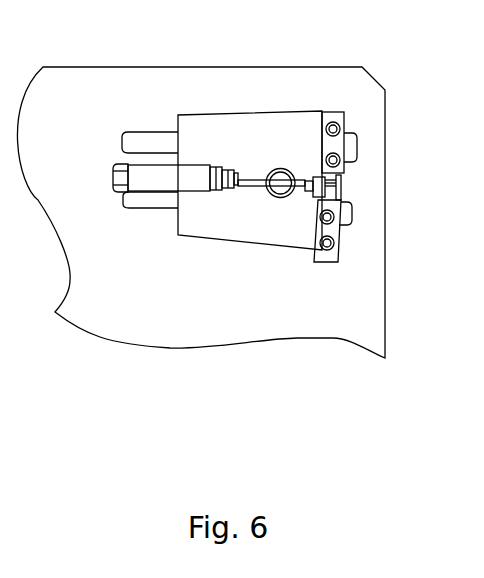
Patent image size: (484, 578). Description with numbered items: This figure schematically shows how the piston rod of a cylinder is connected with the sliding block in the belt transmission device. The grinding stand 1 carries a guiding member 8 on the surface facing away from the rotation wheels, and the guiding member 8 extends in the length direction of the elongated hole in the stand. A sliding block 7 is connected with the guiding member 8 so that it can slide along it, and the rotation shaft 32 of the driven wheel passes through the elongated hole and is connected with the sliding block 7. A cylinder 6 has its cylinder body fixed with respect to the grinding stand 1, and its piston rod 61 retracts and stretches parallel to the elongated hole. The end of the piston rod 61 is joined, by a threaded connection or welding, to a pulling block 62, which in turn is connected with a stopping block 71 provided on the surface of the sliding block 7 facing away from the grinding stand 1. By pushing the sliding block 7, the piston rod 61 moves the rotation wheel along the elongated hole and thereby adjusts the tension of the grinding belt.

The grinding stand 1 is at (85, 115).
The sliding block 7 is at (203, 136).
The guiding member 8 is at (150, 140).
The cylinder 6 is at (167, 177).
The piston rod 61 is at (252, 183).
The rotation shaft 32 is at (283, 168).
The pulling block 62 is at (325, 187).
The stopping block 71 is at (330, 231).